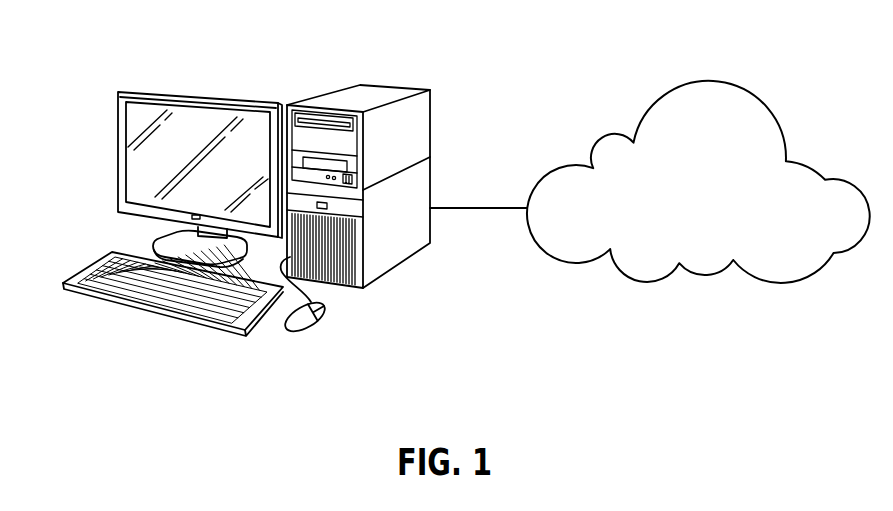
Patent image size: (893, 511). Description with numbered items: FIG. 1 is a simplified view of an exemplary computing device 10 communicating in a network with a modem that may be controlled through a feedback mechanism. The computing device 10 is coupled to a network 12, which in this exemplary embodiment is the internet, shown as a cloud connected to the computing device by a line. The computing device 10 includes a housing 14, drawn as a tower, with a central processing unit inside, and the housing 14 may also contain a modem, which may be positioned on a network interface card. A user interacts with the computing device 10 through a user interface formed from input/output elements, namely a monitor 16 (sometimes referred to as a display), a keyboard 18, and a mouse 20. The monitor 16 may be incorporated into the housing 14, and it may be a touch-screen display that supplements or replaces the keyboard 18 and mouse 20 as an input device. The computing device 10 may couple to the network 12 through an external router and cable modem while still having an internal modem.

The computing device 10 is at (90, 85).
The network 12 is at (717, 270).
The housing 14 is at (430, 140).
The monitor 16 is at (234, 97).
The keyboard 18 is at (108, 297).
The mouse 20 is at (325, 312).